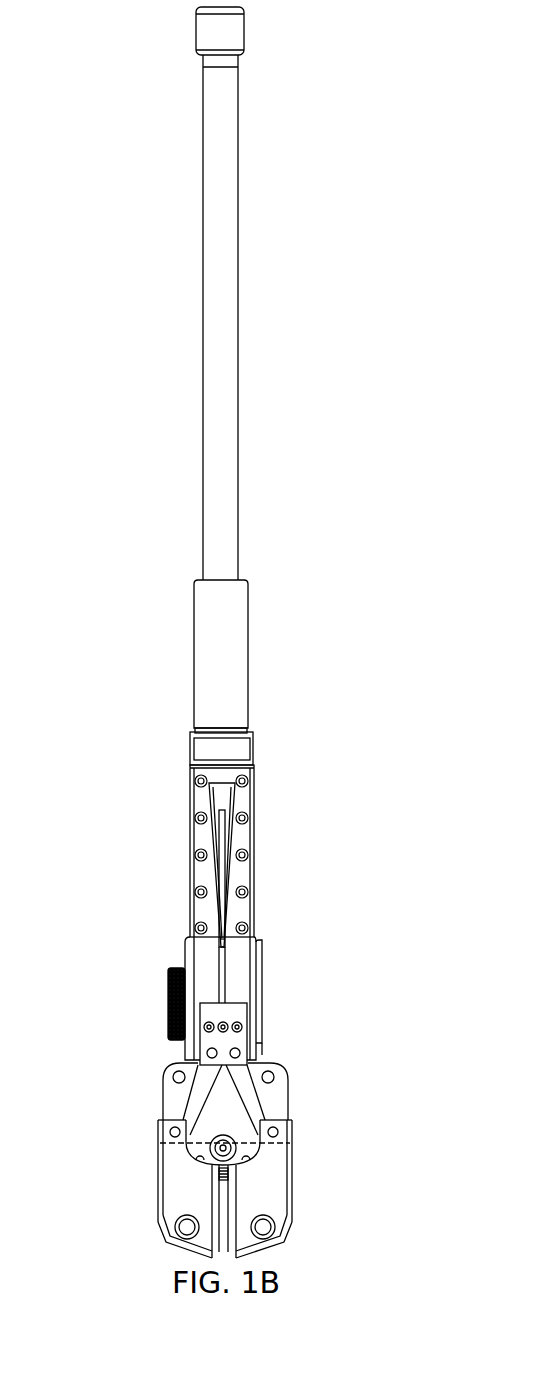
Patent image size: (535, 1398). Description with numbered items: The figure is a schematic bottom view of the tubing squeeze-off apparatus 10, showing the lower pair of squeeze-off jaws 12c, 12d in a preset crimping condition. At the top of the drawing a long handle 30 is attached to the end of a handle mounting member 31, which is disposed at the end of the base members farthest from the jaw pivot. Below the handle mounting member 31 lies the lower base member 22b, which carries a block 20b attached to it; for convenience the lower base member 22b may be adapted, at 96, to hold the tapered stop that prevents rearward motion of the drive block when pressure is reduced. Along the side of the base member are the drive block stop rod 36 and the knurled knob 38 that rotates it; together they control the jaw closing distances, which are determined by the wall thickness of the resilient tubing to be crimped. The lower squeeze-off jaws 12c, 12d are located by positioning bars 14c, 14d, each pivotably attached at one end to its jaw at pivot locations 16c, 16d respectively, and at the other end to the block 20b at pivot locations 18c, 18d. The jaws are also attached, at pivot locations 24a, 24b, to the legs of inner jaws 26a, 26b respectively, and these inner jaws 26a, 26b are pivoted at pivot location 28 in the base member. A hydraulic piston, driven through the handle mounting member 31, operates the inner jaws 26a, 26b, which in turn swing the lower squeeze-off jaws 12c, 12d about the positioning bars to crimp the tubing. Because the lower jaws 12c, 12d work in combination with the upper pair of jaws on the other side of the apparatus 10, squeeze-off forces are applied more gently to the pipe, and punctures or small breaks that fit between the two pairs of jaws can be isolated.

The squeeze-off apparatus 10 is at (265, 328).
The handle 30 is at (213, 337).
The handle mounting member 31 is at (237, 649).
The lower base member 22b is at (208, 968).
The adaptation of lower base member 96 is at (222, 800).
The knurled knob 38 is at (167, 993).
The drive block stop rod 36 is at (263, 988).
The block 20b is at (203, 1017).
The pivot location 18c is at (212, 1053).
The pivot location 18d is at (235, 1053).
The positioning bar 14c is at (187, 1105).
The positioning bar 14d is at (250, 1087).
The pivot location 16c is at (173, 1130).
The pivot location 16d is at (272, 1130).
The inner jaw 26a is at (157, 1163).
The inner jaw 26b is at (295, 1177).
The lower squeeze-off jaw 12c is at (183, 1165).
The lower squeeze-off jaw 12d is at (262, 1188).
The pivot location 28 is at (215, 1153).
The pivot location 24a is at (265, 1225).
The pivot location 24b is at (187, 1227).